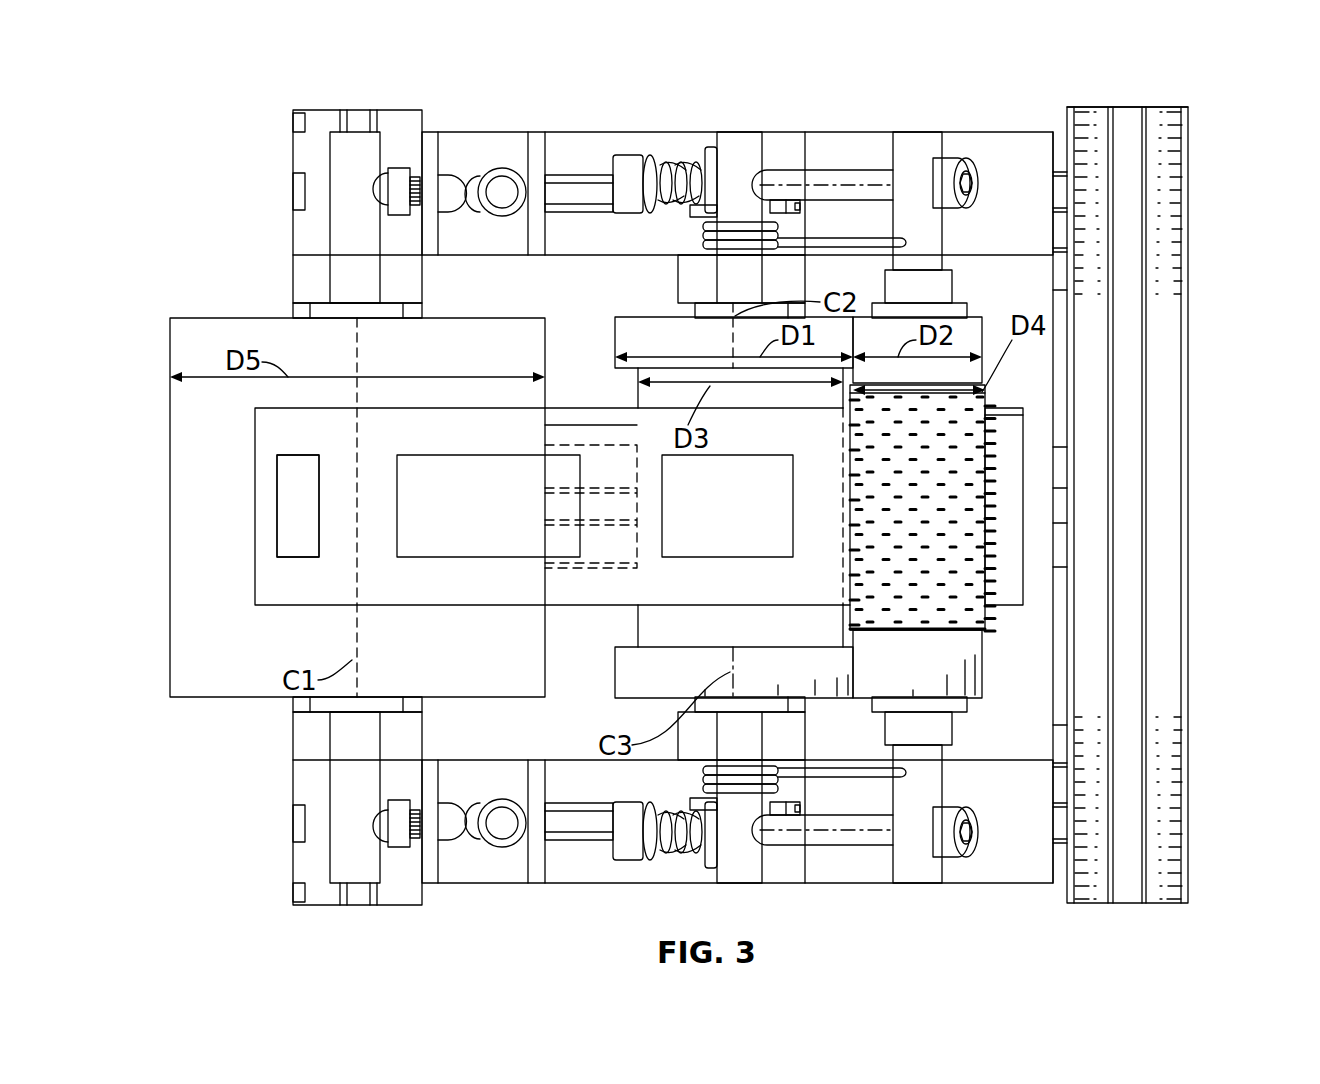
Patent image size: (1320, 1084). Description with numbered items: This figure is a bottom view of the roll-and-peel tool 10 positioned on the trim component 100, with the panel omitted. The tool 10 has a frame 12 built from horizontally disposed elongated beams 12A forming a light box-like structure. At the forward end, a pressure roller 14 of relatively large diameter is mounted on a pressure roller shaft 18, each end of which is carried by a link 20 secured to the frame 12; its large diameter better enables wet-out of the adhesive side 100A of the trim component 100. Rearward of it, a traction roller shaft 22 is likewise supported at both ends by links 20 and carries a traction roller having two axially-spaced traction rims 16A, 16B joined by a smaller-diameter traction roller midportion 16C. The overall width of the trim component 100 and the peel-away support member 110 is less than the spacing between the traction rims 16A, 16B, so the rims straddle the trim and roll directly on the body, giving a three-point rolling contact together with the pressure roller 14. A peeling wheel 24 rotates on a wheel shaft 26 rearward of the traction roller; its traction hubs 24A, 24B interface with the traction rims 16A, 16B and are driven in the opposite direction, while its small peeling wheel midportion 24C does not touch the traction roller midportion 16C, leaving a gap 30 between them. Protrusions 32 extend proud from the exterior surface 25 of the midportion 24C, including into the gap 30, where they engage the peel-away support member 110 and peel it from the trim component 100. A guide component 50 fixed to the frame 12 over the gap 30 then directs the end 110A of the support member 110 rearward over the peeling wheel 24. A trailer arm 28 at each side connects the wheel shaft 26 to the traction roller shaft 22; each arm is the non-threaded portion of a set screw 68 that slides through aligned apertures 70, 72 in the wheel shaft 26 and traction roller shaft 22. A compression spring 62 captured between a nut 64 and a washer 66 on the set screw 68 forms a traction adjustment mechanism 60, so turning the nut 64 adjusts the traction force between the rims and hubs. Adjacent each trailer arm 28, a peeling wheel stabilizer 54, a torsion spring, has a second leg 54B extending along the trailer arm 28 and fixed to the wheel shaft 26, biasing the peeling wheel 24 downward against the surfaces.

The roll-and-peel tool 10 is at (1172, 78).
The frame 12 is at (572, 110).
The elongated beams 12A is at (1057, 563).
The pressure roller 14 is at (188, 350).
The traction rim 16A is at (615, 325).
The traction rim 16B is at (638, 690).
The traction roller midportion 16C is at (648, 615).
The pressure roller shaft 18 is at (346, 158).
The link 20 is at (305, 270).
The traction roller shaft 22 is at (764, 140).
The peeling wheel 24 is at (1000, 412).
The traction hub 24A is at (977, 320).
The traction hub 24B is at (950, 658).
The peeling wheel midportion 24C is at (973, 580).
The exterior surface 25 is at (992, 505).
The wheel shaft 26 is at (907, 157).
The trailer arm 28 is at (868, 175).
The gap 30 is at (848, 397).
The protrusions 32 is at (972, 485).
The guide component 50 is at (1028, 702).
The peeling wheel stabilizer 54 is at (777, 228).
The second leg 54B is at (875, 235).
The traction adjustment mechanism 60 is at (697, 155).
The compression spring 62 is at (655, 172).
The nut 64 is at (620, 167).
The washer 66 is at (714, 160).
The set screw 68 is at (953, 165).
The aperture 70 is at (937, 826).
The aperture 72 is at (797, 813).
The trim component 100 is at (303, 543).
The adhesive side 100A is at (298, 506).
The peel-away support member 110 is at (560, 428).
The end 110A is at (1000, 420).